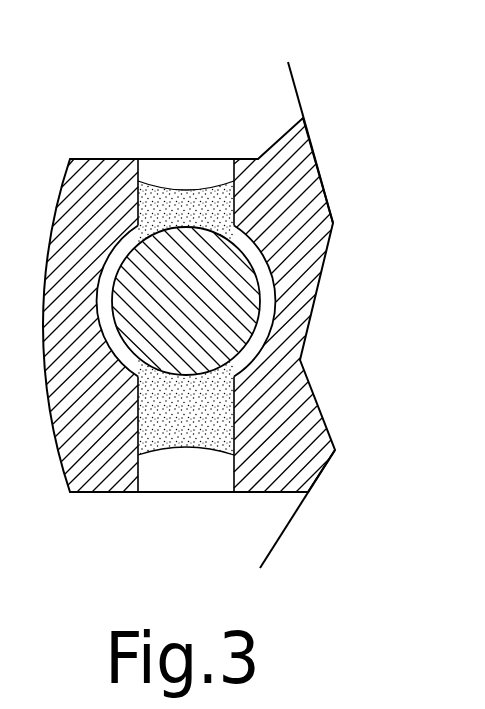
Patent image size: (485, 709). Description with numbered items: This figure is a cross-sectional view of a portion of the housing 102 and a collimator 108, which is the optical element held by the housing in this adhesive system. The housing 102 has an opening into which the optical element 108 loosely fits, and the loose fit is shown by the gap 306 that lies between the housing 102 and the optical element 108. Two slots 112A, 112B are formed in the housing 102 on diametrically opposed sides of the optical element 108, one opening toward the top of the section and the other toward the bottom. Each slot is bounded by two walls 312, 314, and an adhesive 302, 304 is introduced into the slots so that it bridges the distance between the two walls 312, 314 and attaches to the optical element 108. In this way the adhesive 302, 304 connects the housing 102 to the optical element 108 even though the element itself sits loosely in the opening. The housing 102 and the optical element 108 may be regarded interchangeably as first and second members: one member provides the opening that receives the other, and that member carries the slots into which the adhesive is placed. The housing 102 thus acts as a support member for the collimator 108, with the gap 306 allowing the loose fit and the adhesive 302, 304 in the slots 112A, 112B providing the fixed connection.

The housing 102 is at (245, 167).
The collimator 108 is at (250, 270).
The slot 112A is at (165, 103).
The slot 112B is at (157, 510).
The adhesive 302 is at (198, 168).
The adhesive 304 is at (180, 492).
The gap 306 is at (296, 336).
The wall 312 is at (222, 168).
The wall 314 is at (162, 168).